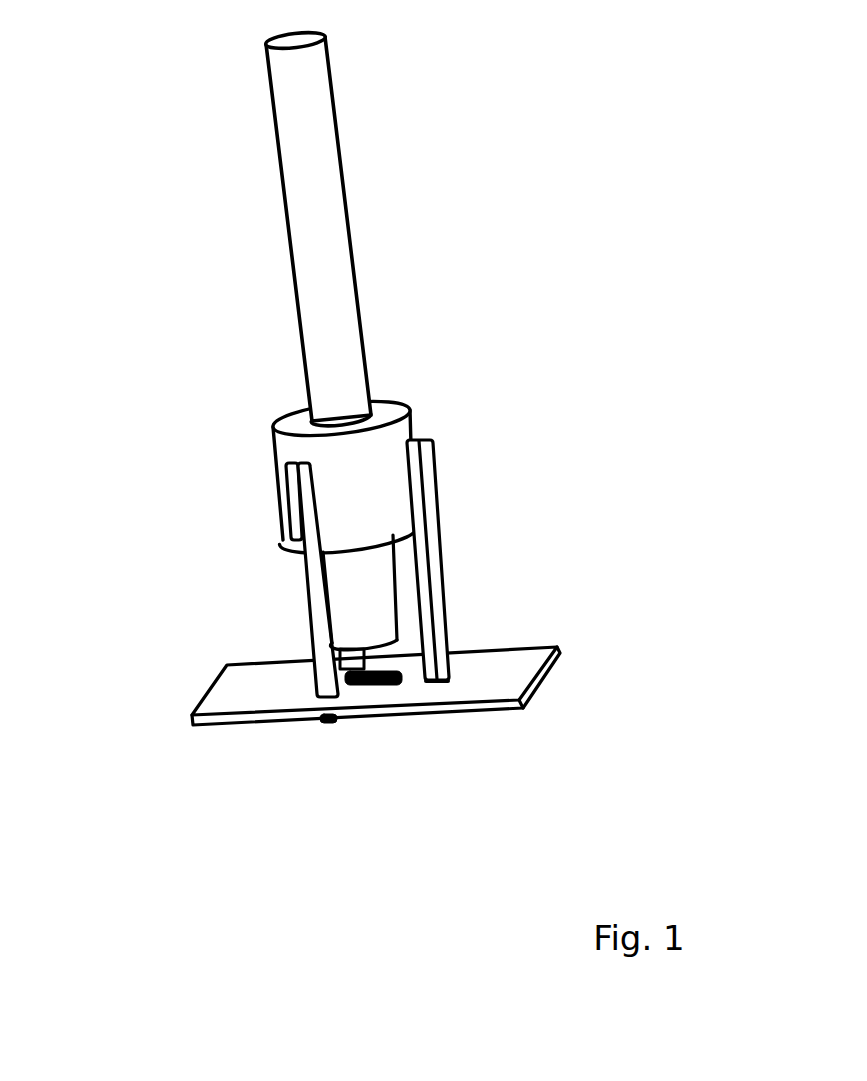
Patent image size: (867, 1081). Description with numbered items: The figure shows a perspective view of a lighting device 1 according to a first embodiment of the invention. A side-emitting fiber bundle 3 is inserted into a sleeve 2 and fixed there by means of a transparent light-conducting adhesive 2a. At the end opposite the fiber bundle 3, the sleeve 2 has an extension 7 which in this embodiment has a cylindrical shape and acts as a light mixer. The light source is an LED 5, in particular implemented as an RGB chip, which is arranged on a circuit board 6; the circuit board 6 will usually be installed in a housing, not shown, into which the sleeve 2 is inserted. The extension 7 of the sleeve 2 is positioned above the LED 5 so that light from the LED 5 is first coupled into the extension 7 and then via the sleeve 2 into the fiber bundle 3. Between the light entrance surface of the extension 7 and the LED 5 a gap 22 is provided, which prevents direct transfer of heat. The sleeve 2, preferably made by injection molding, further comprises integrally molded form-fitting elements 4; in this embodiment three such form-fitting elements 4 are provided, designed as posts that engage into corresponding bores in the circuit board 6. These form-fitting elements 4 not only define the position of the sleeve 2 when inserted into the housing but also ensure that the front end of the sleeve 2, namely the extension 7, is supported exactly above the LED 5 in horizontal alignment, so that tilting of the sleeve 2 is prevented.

The lighting device 1 is at (585, 273).
The sleeve 2 is at (367, 468).
The transparent light-conducting adhesive 2a is at (315, 427).
The side-emitting fiber bundle 3 is at (318, 217).
The form-fitting elements 4 is at (293, 694).
The LED 5 is at (386, 680).
The circuit board 6 is at (495, 663).
The extension 7 is at (360, 600).
The gap 22 is at (368, 653).